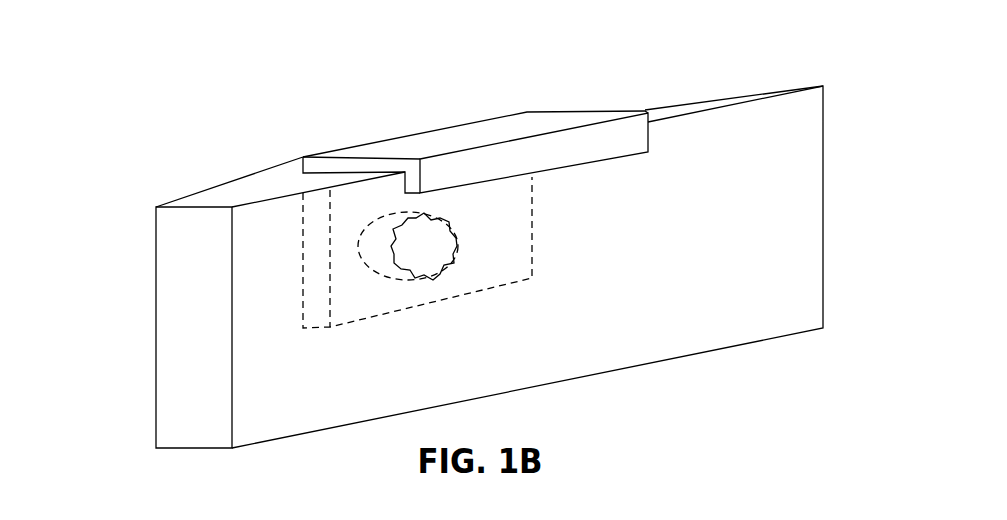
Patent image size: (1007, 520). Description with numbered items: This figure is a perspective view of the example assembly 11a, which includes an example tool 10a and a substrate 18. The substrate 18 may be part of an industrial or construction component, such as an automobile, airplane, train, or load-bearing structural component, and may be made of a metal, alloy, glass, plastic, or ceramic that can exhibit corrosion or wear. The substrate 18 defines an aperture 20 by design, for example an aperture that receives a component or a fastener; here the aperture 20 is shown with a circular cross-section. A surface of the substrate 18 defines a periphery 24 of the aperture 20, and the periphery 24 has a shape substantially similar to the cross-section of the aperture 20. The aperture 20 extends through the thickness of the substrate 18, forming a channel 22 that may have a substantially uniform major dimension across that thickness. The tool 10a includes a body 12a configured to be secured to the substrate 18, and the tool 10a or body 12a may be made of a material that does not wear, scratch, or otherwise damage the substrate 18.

The assembly 11a is at (125, 92).
The substrate 18 is at (800, 202).
The tool 10a is at (523, 127).
The body 12a is at (308, 171).
The aperture 20 is at (427, 248).
The channel 22 is at (392, 278).
The periphery 24 is at (443, 270).